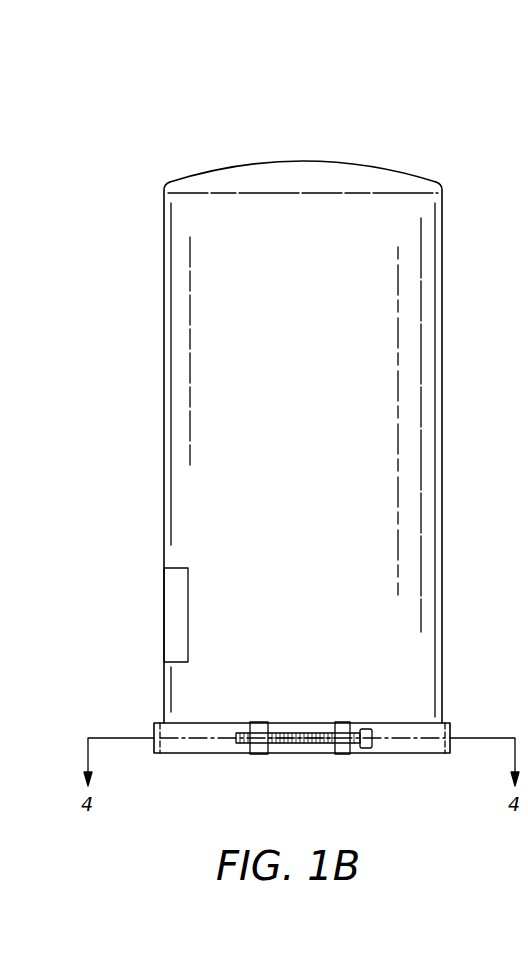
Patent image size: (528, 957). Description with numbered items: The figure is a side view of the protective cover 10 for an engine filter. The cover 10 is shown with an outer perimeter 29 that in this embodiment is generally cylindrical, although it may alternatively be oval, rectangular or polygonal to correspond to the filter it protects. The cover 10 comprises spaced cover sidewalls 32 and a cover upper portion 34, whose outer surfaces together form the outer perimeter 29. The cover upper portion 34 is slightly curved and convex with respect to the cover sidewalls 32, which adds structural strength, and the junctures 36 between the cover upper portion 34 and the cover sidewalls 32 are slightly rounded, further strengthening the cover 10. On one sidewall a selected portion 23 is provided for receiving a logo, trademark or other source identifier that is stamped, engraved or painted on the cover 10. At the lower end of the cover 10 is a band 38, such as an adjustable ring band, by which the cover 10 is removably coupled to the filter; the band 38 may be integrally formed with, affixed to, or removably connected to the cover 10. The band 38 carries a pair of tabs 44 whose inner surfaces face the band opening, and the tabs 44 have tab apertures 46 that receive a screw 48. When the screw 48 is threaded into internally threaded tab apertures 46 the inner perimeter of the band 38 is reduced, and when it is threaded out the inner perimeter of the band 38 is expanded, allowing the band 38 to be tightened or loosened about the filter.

The protective cover 10 is at (124, 125).
The selected portion 23 is at (183, 568).
The outer perimeter 29 is at (444, 400).
The cover sidewalls 32 is at (164, 432).
The cover upper portion 34 is at (364, 162).
The junctures 36 is at (164, 184).
The band 38 is at (432, 753).
The tabs 44 is at (237, 722).
The tab apertures 46 is at (262, 722).
The screw 48 is at (372, 745).